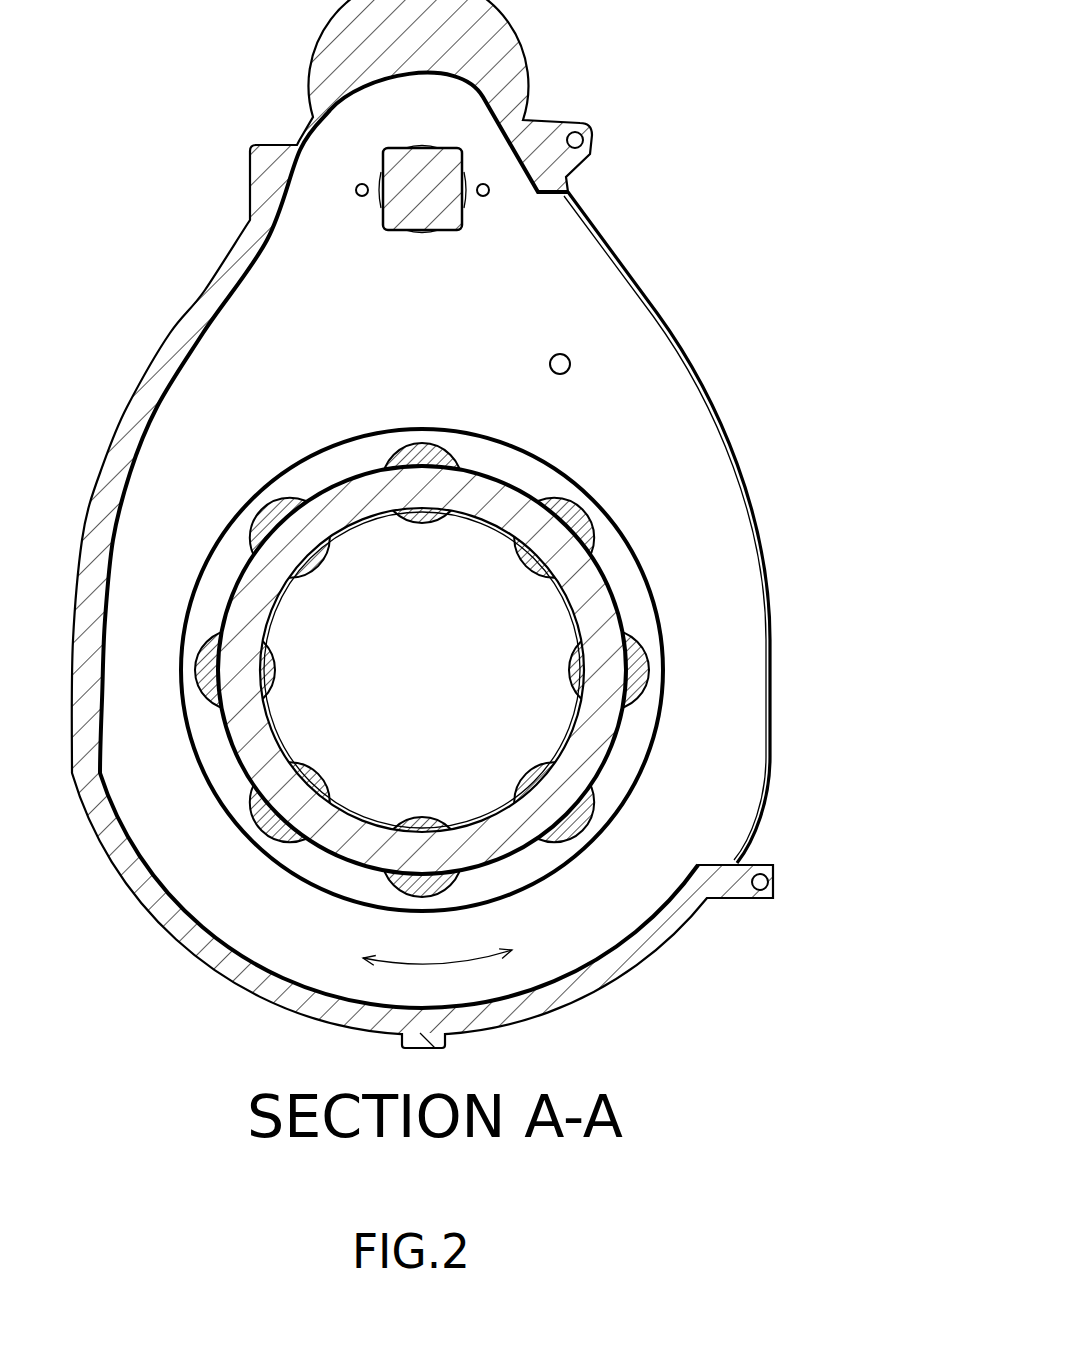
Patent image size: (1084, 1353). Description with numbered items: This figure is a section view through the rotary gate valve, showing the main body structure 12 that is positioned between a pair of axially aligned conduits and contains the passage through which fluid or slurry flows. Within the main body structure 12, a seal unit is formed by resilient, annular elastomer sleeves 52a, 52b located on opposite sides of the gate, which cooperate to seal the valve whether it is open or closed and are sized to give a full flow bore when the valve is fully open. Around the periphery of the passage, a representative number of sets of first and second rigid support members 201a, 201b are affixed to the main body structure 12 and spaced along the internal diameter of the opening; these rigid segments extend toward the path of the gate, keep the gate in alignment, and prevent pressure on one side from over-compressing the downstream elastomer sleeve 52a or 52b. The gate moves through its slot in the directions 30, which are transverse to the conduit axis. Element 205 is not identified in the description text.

The main body structure 12 is at (660, 936).
The first rigid support member 201a is at (574, 610).
The second rigid support member 201b is at (573, 521).
The inner bearing ring 205 is at (617, 596).
The elastomer sleeve 52a is at (571, 811).
The elastomer sleeve 52b is at (503, 830).
The directions 30 is at (437, 947).